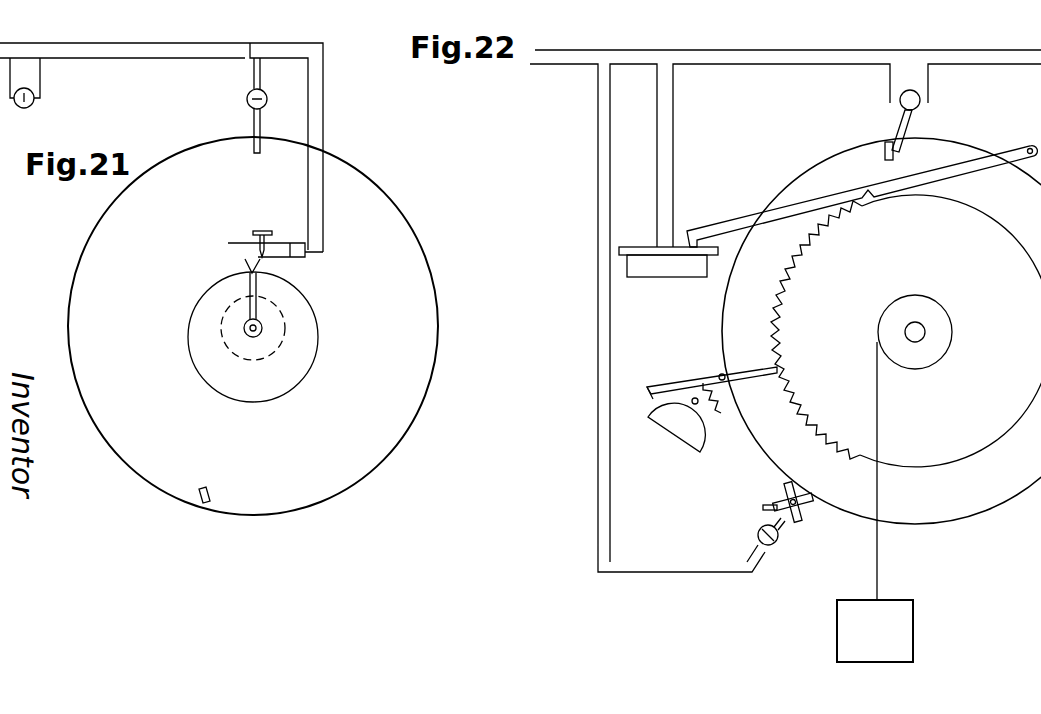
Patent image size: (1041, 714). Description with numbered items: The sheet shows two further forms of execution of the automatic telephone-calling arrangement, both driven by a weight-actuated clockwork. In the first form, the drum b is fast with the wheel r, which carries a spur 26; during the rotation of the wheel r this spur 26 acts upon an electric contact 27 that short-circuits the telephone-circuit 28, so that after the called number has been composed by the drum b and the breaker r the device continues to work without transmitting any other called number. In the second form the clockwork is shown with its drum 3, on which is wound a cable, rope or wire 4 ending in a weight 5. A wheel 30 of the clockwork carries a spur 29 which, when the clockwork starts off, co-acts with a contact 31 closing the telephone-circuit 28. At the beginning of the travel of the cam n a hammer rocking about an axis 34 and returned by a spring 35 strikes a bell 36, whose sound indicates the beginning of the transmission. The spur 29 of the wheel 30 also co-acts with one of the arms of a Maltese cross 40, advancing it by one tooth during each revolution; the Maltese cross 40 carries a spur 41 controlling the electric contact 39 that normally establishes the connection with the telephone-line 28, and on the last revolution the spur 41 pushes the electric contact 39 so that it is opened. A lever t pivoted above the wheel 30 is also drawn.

In FIG. 22, the drum 3 is at (948, 329).
In FIG. 22, the cable, rope or wire 4 is at (877, 568).
In FIG. 22, the weight 5 is at (898, 640).
In FIG. 21, the spur 26 is at (200, 497).
In FIG. 21, the electric contact 27 is at (246, 99).
In FIG. 21, the telephone-circuit 28 is at (138, 58).
In FIG. 22, the telephone-circuit 28 is at (840, 65).
In FIG. 22, the spur 29 is at (885, 147).
In FIG. 22, the wheel 30 is at (972, 500).
In FIG. 22, the contact 31 is at (920, 102).
In FIG. 22, the axis 34 is at (720, 374).
In FIG. 22, the spring 35 is at (712, 385).
In FIG. 22, the bell 36 is at (680, 428).
In FIG. 22, the electric contact 39 is at (776, 541).
In FIG. 22, the Maltese cross 40 is at (780, 497).
In FIG. 22, the spur 41 is at (768, 506).
In FIG. 21, the wheel r is at (308, 250).
In FIG. 21, the cam n is at (253, 295).
In FIG. 21, the drum b is at (302, 320).
In FIG. 22, the lever t is at (793, 207).